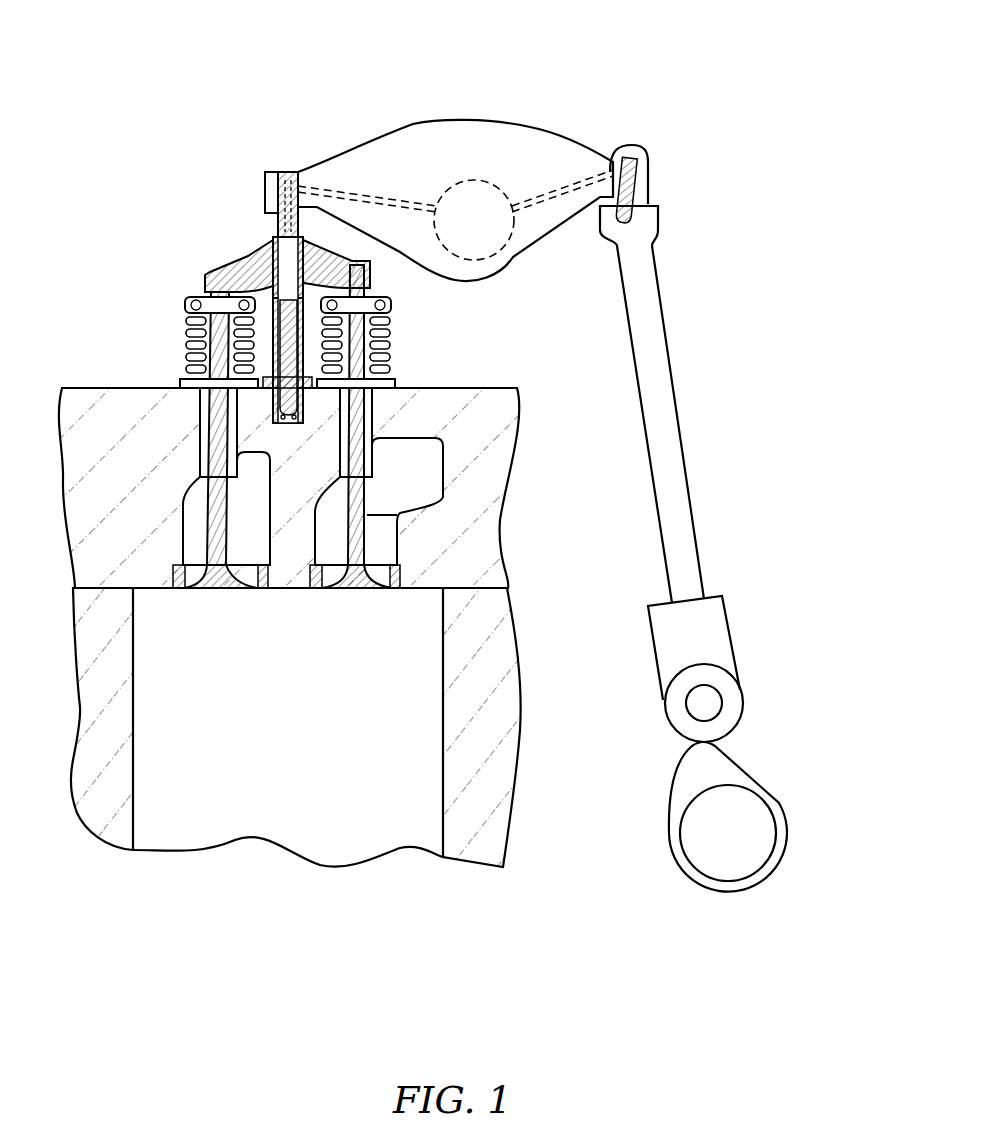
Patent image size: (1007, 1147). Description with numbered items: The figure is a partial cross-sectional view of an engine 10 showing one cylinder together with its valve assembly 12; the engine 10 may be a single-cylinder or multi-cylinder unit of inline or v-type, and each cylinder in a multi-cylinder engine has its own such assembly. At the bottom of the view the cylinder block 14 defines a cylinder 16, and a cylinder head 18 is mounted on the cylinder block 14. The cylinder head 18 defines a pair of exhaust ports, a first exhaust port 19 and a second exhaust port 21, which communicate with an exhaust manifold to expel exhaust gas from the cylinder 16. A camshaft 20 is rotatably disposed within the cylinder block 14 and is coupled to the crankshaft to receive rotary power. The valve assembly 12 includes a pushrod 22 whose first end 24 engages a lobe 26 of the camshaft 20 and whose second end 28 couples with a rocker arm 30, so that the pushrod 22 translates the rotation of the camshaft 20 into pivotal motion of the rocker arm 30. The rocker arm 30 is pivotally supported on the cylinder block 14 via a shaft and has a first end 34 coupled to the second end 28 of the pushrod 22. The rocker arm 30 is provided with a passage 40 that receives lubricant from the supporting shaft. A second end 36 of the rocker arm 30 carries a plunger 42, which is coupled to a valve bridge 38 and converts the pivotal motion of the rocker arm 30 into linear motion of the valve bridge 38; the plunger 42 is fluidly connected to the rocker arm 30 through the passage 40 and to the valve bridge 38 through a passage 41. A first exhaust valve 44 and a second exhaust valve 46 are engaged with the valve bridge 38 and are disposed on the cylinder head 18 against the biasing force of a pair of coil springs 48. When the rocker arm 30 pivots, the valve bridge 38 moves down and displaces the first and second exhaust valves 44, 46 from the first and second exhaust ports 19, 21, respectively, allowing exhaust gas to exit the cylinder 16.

The engine 10 is at (447, 501).
The valve assembly 12 is at (421, 154).
The cylinder block 14 is at (493, 702).
The cylinder 16 is at (312, 744).
The cylinder head 18 is at (92, 420).
The first exhaust port 19 is at (185, 546).
The camshaft 20 is at (742, 862).
The second exhaust port 21 is at (460, 425).
The pushrod 22 is at (652, 351).
The first end 24 is at (755, 706).
The lobe 26 is at (728, 767).
The second end 28 is at (718, 467).
The rocker arm 30 is at (455, 108).
The first end 34 is at (603, 140).
The second end 36 is at (308, 157).
The valve bridge 38 is at (198, 262).
The passage 40 is at (352, 190).
The passage 41 is at (293, 190).
The plunger 42 is at (280, 226).
The first exhaust valve 44 is at (212, 504).
The second exhaust valve 46 is at (400, 515).
The coil springs 48 is at (170, 316).